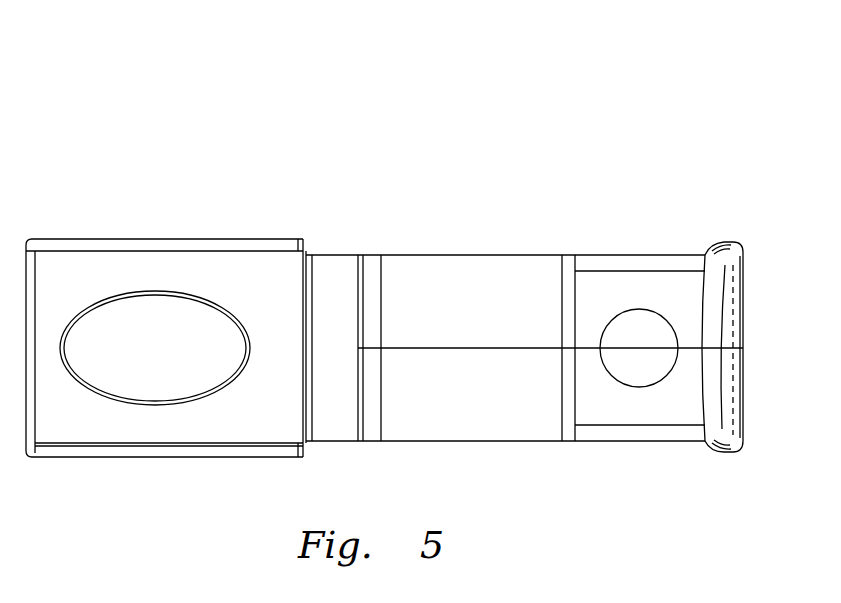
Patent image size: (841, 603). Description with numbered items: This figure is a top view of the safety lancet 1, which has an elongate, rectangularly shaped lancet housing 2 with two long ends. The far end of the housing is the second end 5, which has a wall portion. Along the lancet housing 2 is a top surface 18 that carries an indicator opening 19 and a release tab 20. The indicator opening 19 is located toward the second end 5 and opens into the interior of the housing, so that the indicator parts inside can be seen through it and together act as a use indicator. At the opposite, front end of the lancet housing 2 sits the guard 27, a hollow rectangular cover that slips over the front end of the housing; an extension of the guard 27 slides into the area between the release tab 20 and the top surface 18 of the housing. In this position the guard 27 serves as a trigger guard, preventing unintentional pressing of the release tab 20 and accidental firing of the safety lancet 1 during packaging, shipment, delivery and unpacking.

The safety lancet 1 is at (348, 143).
The lancet housing 2 is at (598, 441).
The second end 5 is at (743, 311).
The top surface 18 is at (626, 290).
The indicator opening 19 is at (658, 312).
The release tab 20 is at (448, 307).
The guard 27 is at (77, 274).